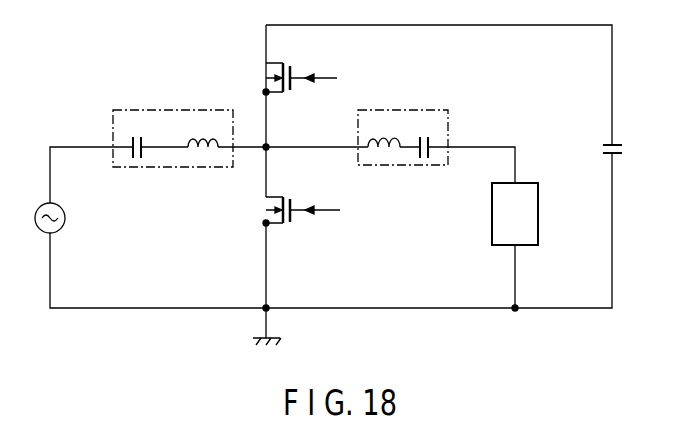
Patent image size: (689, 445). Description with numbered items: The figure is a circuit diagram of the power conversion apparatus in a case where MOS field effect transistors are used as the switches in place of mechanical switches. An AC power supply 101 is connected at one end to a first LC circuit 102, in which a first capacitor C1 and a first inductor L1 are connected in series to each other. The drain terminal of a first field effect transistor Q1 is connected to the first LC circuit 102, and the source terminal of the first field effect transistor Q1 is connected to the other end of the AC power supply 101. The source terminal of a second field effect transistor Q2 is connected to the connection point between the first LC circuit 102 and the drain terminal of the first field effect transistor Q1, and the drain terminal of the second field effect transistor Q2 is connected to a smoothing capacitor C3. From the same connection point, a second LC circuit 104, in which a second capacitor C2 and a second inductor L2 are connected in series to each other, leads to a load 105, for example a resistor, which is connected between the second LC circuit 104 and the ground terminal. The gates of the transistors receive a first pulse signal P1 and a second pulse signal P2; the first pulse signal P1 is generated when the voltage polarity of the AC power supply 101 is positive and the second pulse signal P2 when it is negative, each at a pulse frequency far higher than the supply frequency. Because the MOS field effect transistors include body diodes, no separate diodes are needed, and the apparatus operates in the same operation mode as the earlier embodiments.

The AC power supply 101 is at (61, 208).
The first LC circuit 102 is at (173, 121).
The second LC circuit 104 is at (403, 119).
The load 105 is at (538, 214).
The first capacitor C1 is at (136, 135).
The first inductor L1 is at (172, 98).
The second inductor L2 is at (384, 130).
The second capacitor C2 is at (404, 96).
The smoothing capacitor C3 is at (600, 150).
The first field effect transistor Q1 is at (278, 199).
The second field effect transistor Q2 is at (278, 66).
The first pulse signal P1 is at (315, 221).
The second pulse signal P2 is at (313, 89).